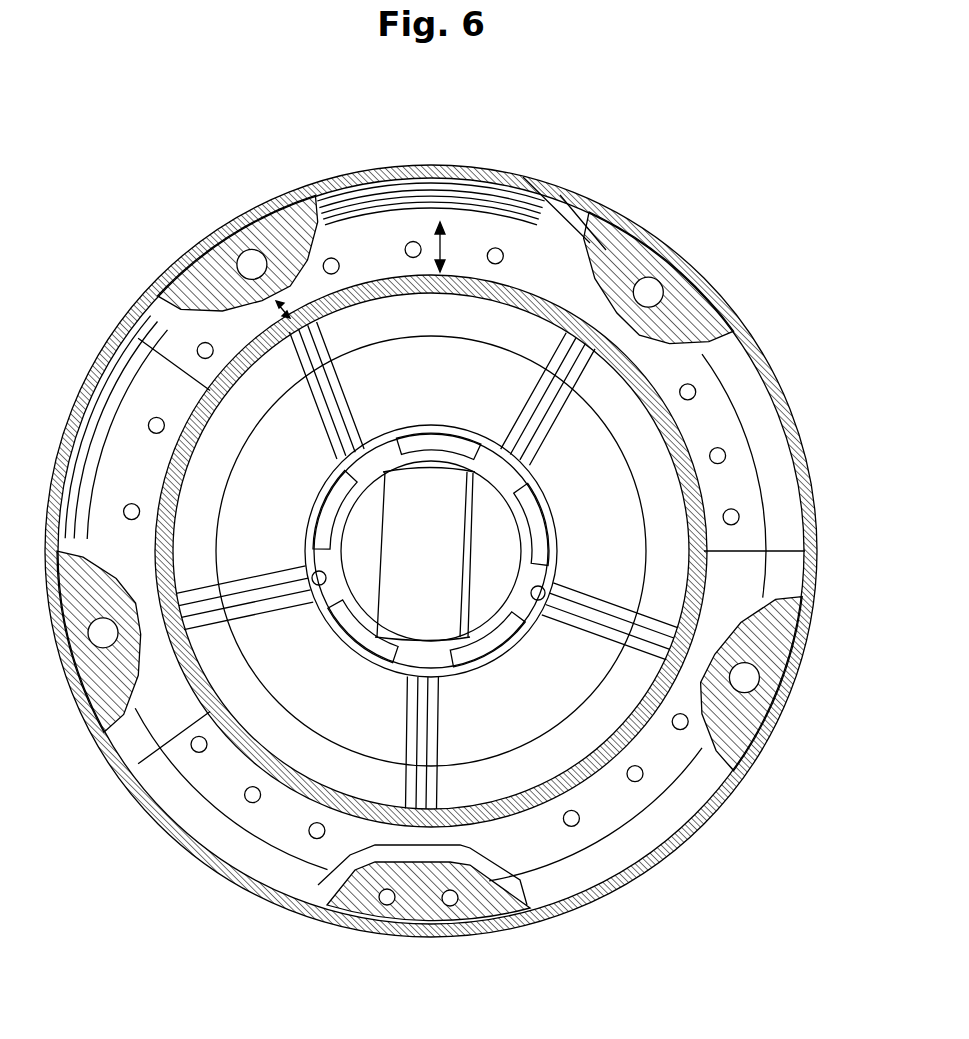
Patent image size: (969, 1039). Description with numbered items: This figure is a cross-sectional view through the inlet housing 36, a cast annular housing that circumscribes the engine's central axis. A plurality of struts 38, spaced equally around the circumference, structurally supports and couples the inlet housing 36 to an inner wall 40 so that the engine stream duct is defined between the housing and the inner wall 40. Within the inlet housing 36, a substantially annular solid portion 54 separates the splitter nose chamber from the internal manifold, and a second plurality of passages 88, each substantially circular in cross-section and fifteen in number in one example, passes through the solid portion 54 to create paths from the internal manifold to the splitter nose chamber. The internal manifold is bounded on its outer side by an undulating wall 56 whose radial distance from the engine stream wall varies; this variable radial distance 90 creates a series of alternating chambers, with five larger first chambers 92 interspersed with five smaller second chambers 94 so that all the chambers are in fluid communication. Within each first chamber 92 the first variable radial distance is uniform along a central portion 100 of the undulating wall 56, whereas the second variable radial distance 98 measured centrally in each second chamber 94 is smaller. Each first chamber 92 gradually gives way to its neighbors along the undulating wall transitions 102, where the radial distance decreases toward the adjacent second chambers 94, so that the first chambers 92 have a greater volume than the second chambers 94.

The inlet housing 36 is at (720, 293).
The struts 38 is at (500, 860).
The inner wall 40 is at (345, 640).
The solid portion 54 is at (740, 470).
The undulating wall 56 is at (590, 253).
The second plurality of passages 88 is at (740, 518).
The variable radial distance 90 is at (447, 247).
The first chambers 92 is at (422, 226).
The second chambers 94 is at (225, 262).
The second variable radial distance 98 is at (286, 300).
The central portion 100 is at (497, 193).
The undulating wall transitions 102 is at (392, 238).